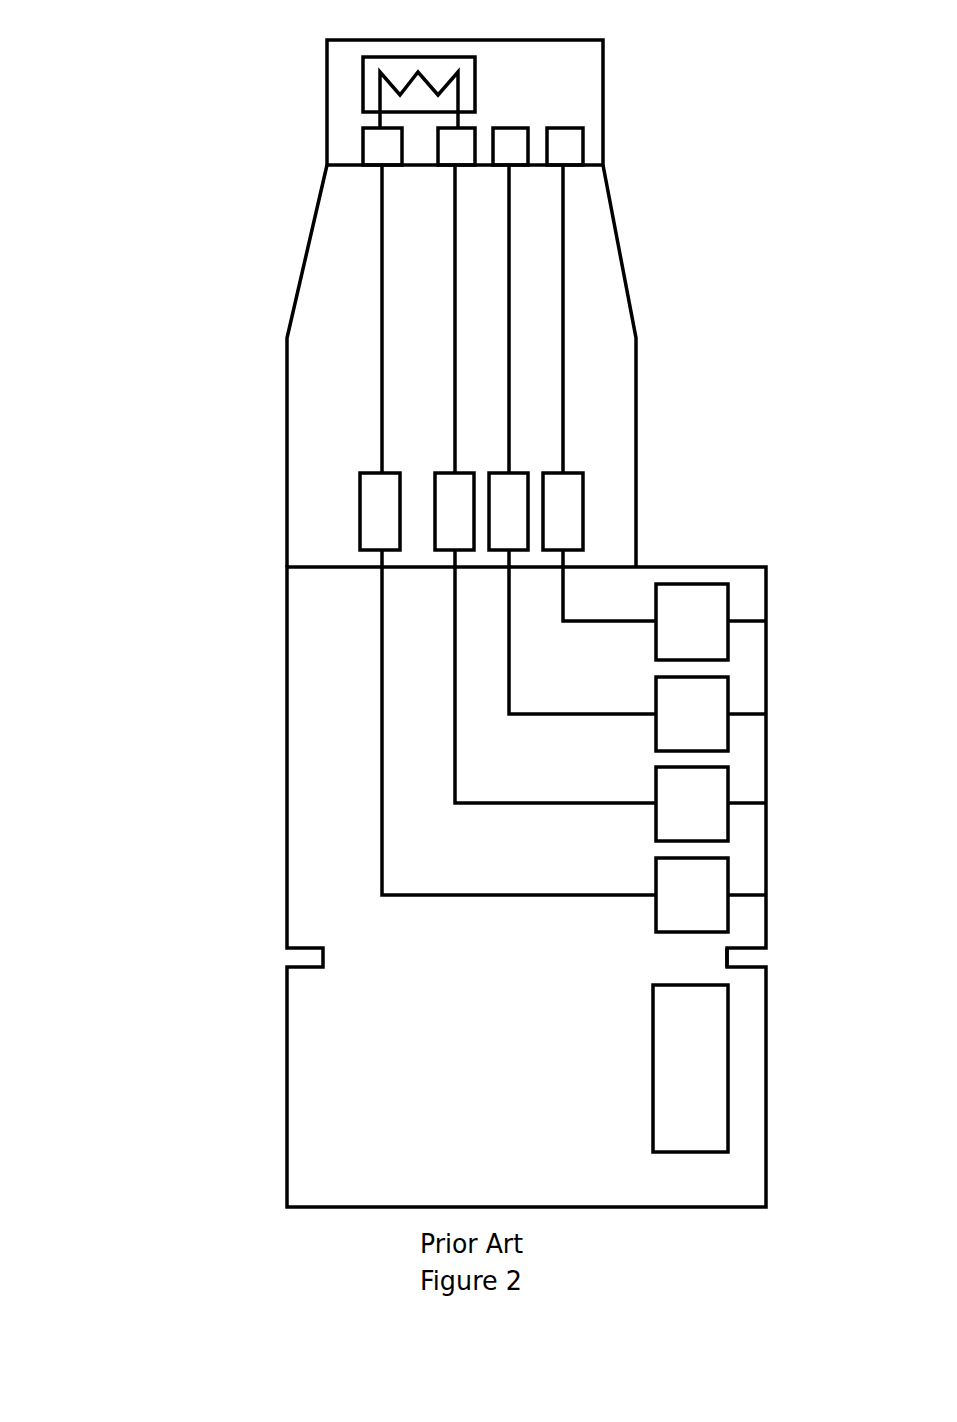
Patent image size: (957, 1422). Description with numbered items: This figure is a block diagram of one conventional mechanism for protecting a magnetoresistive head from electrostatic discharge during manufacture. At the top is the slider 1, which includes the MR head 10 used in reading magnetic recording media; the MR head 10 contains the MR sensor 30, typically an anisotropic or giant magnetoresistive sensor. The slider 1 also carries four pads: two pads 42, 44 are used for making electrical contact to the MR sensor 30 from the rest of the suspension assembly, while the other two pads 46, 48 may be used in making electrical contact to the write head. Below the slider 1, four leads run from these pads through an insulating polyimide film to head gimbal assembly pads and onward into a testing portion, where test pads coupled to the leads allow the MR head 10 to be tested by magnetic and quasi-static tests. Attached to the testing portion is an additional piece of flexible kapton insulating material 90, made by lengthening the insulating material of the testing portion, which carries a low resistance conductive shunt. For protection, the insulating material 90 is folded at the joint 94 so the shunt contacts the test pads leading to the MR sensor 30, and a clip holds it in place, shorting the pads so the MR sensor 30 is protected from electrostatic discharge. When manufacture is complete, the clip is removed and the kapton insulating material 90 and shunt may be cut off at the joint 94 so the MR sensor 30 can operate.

The slider 1 is at (603, 78).
The MR head 10 is at (378, 76).
The MR sensor 30 is at (382, 93).
The pad 42 is at (365, 147).
The pad 44 is at (438, 165).
The pad 46 is at (530, 130).
The pad 48 is at (583, 150).
The insulating material 90 is at (251, 964).
The joint 94 is at (732, 958).